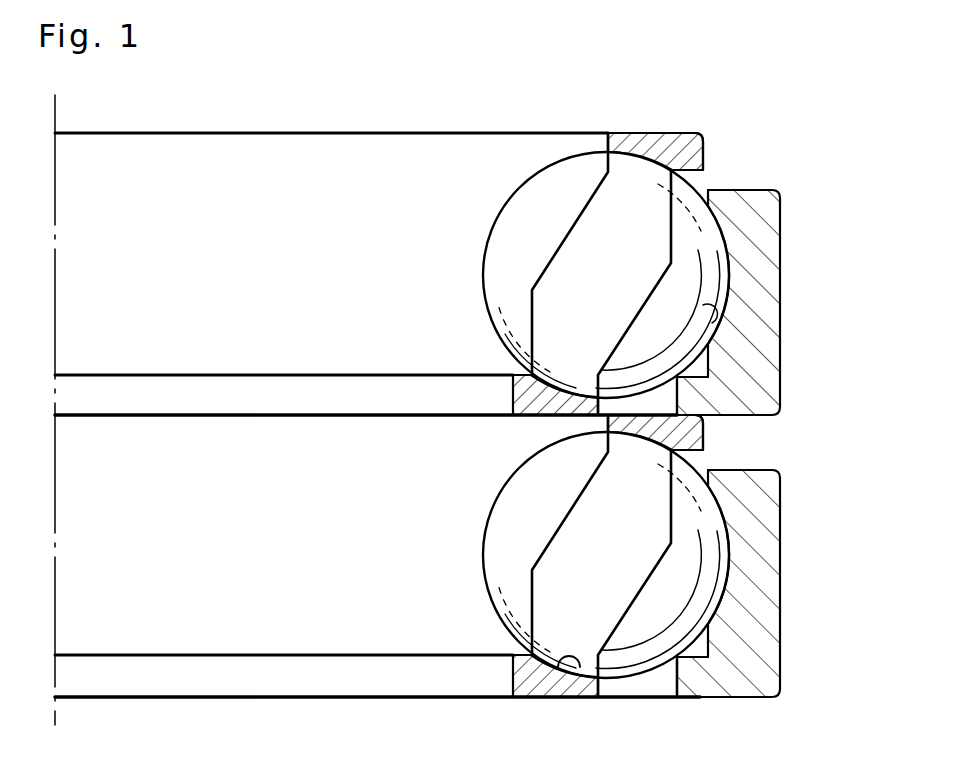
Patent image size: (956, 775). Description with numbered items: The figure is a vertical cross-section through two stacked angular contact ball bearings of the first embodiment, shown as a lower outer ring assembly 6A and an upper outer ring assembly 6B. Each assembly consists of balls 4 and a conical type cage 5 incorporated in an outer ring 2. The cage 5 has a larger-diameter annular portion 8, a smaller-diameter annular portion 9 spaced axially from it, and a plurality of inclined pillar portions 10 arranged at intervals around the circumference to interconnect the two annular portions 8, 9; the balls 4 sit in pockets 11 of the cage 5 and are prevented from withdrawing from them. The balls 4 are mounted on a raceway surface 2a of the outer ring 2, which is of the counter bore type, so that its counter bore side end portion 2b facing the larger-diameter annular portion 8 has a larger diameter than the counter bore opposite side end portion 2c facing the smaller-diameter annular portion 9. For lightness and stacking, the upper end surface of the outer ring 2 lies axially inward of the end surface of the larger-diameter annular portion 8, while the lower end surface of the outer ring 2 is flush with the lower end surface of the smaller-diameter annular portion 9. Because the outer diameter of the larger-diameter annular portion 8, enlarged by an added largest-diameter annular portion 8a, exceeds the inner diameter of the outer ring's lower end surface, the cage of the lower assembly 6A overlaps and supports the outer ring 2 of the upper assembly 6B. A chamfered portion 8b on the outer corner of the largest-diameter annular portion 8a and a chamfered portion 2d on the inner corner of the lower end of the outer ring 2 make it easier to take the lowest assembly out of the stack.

The outer ring 2 is at (778, 292).
The raceway surface 2a is at (770, 330).
The counter bore side end portion 2b is at (752, 195).
The counter bore opposite side end portion 2c is at (735, 408).
The chamfered portion 2d is at (782, 502).
The balls 4 is at (530, 202).
The conical type cage 5 is at (555, 247).
The lower outer ring assembly 6A is at (790, 588).
The upper outer ring assembly 6B is at (795, 235).
The larger-diameter annular portion 8 is at (642, 137).
The largest-diameter annular portion 8a is at (698, 158).
The chamfered portion 8b is at (700, 132).
The smaller-diameter annular portion 9 is at (533, 375).
The inclined pillar portions 10 is at (552, 287).
The pockets 11 is at (578, 670).